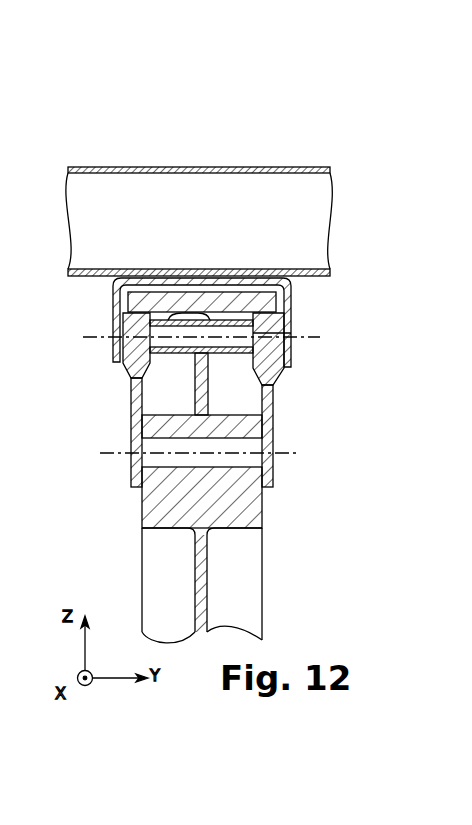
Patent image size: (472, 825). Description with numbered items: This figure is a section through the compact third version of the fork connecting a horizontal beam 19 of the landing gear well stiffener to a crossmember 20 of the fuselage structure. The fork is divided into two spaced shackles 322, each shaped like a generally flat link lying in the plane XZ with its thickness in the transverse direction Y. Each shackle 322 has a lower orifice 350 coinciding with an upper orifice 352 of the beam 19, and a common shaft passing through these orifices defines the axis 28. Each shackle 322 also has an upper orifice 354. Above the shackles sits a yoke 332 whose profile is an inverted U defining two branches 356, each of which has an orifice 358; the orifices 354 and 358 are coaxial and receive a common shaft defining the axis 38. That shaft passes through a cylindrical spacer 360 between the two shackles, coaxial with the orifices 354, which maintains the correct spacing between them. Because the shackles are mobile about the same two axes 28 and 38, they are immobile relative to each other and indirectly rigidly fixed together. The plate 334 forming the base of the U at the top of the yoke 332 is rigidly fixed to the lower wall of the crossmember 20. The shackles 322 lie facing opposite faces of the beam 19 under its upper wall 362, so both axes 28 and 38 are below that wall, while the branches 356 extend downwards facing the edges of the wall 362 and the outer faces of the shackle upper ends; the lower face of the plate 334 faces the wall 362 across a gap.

The horizontal beam 19 is at (228, 581).
The crossmember 20 is at (232, 190).
The axis 28 is at (100, 453).
The axis 38 is at (83, 338).
The shackle 322 is at (135, 423).
The yoke 332 is at (113, 290).
The plate 334 is at (222, 270).
The lower orifice 350 is at (272, 461).
The upper orifice 352 is at (178, 463).
The upper orifice 354 is at (272, 342).
The branch 356 is at (115, 356).
The orifice 358 is at (284, 333).
The cylindrical spacer 360 is at (178, 325).
The upper wall 362 is at (250, 303).